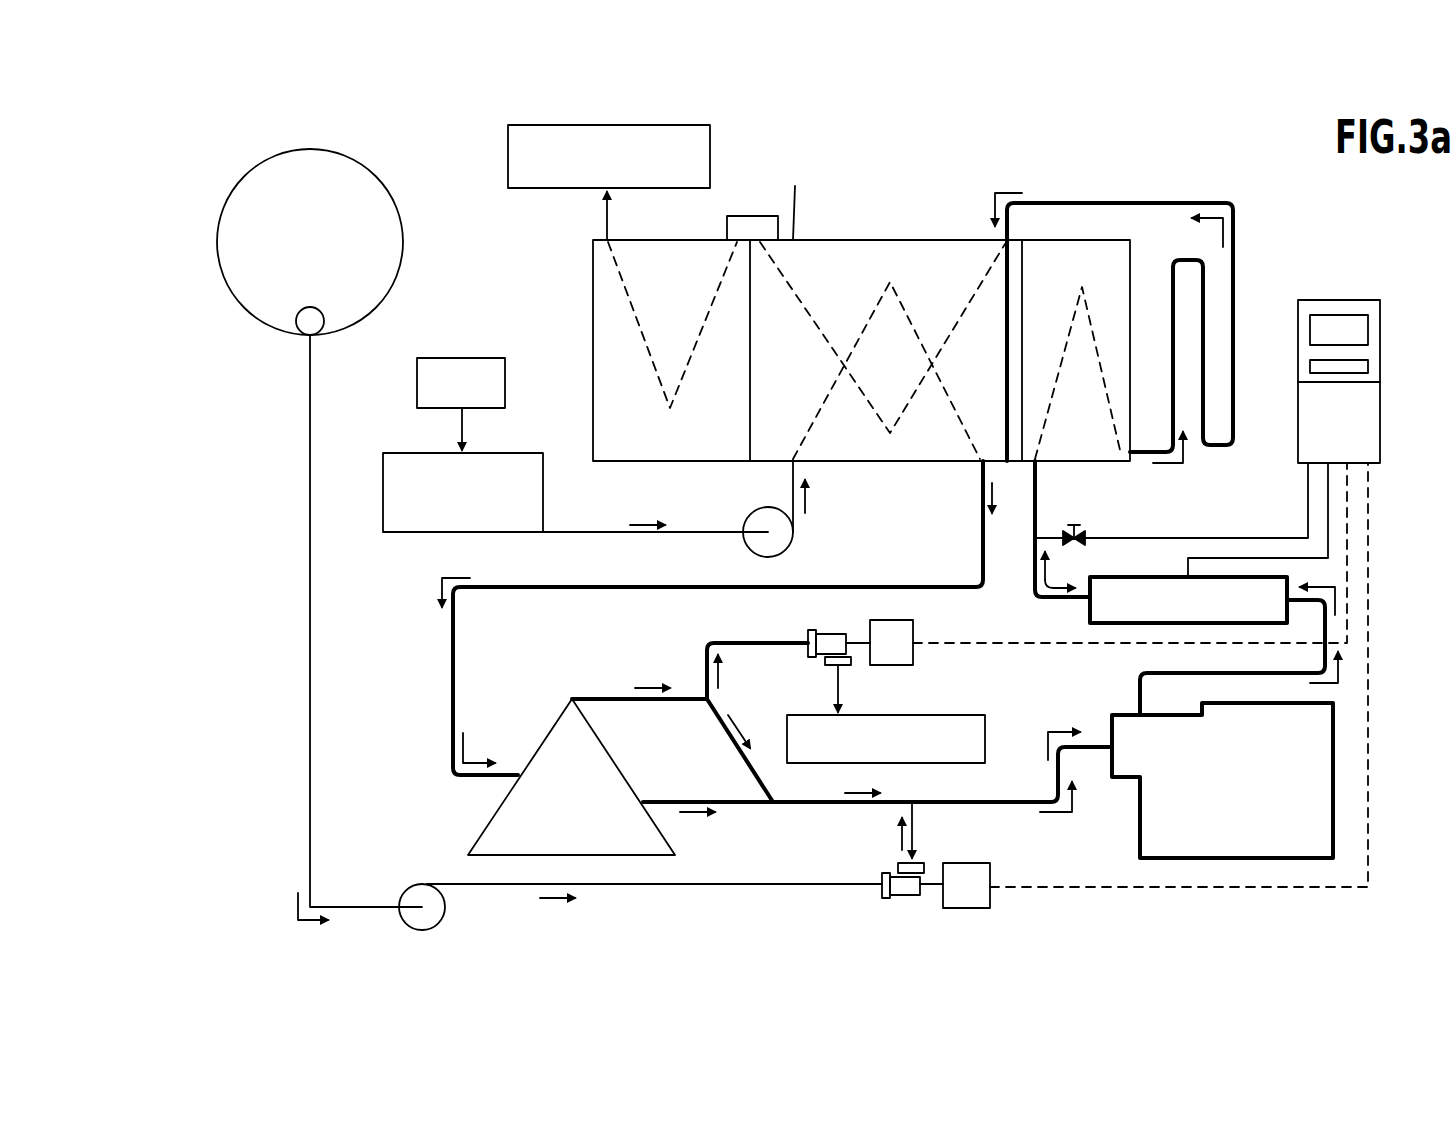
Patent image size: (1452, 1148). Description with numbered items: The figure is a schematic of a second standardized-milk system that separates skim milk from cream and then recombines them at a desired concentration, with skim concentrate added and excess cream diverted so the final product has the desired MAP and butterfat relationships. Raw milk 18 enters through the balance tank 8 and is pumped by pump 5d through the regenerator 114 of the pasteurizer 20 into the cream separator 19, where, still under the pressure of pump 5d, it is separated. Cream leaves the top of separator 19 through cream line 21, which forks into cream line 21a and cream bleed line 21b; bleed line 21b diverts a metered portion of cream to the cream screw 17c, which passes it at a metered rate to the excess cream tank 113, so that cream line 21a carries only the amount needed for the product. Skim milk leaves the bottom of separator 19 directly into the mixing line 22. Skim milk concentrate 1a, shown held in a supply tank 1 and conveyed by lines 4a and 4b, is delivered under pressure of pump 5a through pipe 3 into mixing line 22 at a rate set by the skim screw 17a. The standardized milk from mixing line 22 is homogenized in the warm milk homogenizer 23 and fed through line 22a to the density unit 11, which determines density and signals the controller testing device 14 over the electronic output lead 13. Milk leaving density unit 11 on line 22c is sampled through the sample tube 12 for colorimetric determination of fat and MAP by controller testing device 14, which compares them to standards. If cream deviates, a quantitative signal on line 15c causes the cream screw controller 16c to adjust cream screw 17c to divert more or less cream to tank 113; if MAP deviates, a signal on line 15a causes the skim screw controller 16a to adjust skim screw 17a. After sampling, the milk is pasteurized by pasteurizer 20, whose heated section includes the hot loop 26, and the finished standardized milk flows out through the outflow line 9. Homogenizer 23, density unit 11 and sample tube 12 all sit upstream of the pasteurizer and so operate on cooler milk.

The skim concentrate tank 1 is at (237, 182).
The skim milk concentrate 1a is at (323, 201).
The pipe 3 is at (913, 838).
The skim concentrate supply pipe 4a is at (308, 598).
The skim concentrate feed pipe 4b is at (642, 888).
The pump 5a is at (446, 902).
The pump 5d is at (790, 545).
The balance tank 8 is at (447, 535).
The outflow line 9 is at (598, 124).
The density unit 11 is at (1088, 608).
The sample tube 12 is at (1187, 536).
The electronic output lead 13 is at (1186, 575).
The controller testing device 14 is at (1382, 355).
The line 15a is at (1177, 889).
The line 15c is at (965, 645).
The skim screw controller 16a is at (968, 910).
The cream screw controller 16c is at (890, 667).
The skim screw 17a is at (902, 898).
The cream screw 17c is at (810, 660).
The raw milk 18 is at (470, 356).
The cream separator 19 is at (490, 815).
The pasteurizer 20 is at (760, 180).
The cream line 21 is at (618, 697).
The cream line 21a is at (733, 748).
The cream bleed line 21b is at (760, 642).
The mixing line 22 is at (740, 805).
The line 22a is at (1138, 702).
The line 22c is at (1035, 575).
The warm milk homogenizer 23 is at (1138, 812).
The hot loop 26 is at (1138, 202).
The excess cream tank 113 is at (985, 742).
The regenerator 114 is at (804, 199).